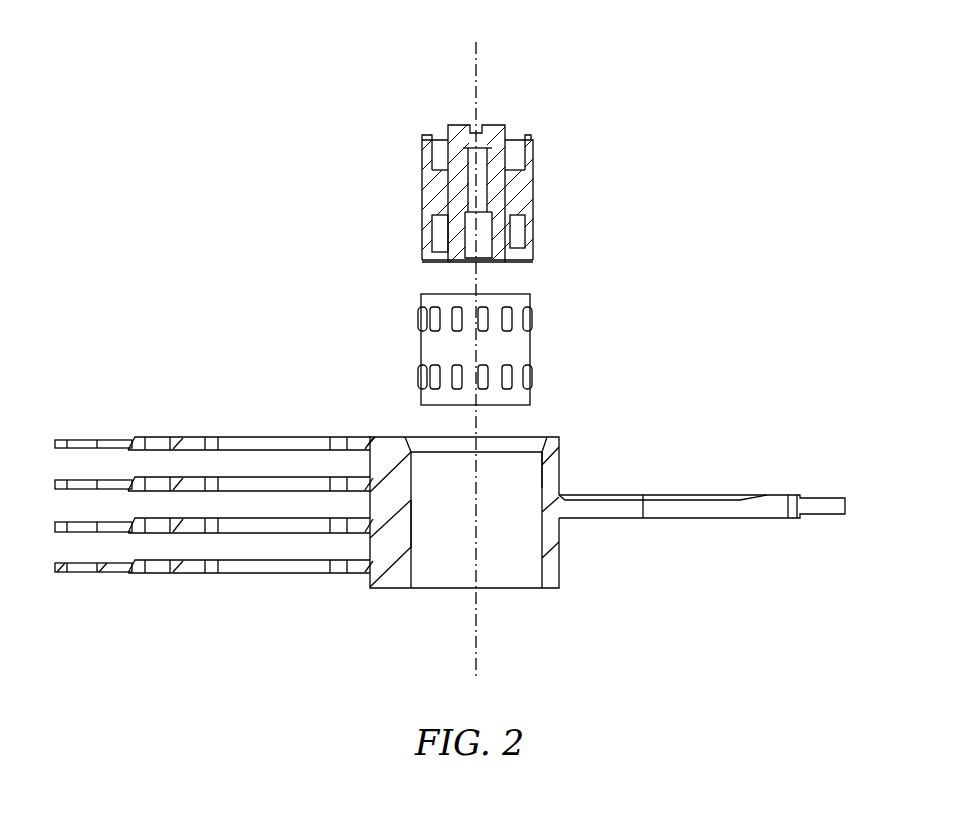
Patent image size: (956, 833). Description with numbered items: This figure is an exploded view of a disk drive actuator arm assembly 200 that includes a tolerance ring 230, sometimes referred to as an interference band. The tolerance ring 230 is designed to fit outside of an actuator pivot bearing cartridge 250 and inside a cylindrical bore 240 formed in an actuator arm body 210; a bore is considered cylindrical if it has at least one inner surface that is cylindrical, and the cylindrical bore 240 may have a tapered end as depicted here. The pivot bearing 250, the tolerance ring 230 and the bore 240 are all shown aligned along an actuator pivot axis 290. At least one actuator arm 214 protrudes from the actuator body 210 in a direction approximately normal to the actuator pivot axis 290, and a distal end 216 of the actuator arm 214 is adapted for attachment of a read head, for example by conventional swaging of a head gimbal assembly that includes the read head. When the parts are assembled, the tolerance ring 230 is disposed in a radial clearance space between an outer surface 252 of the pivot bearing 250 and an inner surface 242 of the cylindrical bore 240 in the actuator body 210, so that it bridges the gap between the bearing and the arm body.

The disk drive actuator arm assembly 200 is at (290, 232).
The actuator arm body 210 is at (377, 437).
The actuator arm 214 is at (245, 442).
The distal end 216 is at (84, 440).
The tolerance ring 230 is at (533, 343).
The cylindrical bore 240 is at (411, 547).
The inner surface 242 is at (542, 488).
The actuator pivot bearing cartridge 250 is at (513, 133).
The outer surface 252 is at (533, 176).
The actuator pivot axis 290 is at (476, 615).